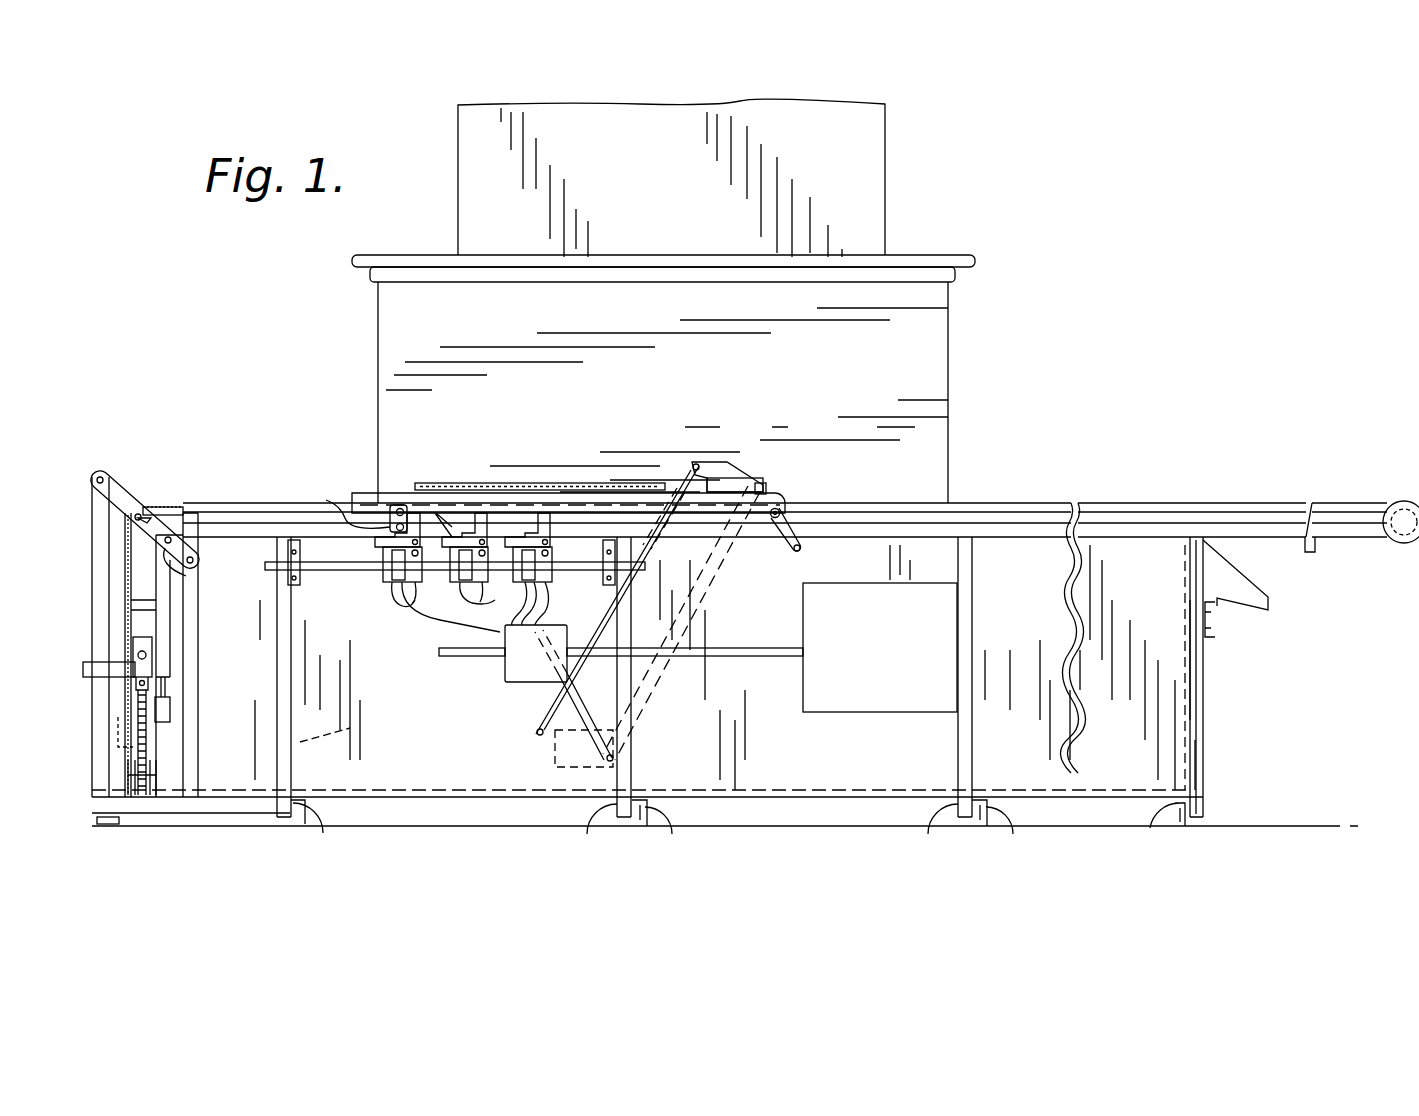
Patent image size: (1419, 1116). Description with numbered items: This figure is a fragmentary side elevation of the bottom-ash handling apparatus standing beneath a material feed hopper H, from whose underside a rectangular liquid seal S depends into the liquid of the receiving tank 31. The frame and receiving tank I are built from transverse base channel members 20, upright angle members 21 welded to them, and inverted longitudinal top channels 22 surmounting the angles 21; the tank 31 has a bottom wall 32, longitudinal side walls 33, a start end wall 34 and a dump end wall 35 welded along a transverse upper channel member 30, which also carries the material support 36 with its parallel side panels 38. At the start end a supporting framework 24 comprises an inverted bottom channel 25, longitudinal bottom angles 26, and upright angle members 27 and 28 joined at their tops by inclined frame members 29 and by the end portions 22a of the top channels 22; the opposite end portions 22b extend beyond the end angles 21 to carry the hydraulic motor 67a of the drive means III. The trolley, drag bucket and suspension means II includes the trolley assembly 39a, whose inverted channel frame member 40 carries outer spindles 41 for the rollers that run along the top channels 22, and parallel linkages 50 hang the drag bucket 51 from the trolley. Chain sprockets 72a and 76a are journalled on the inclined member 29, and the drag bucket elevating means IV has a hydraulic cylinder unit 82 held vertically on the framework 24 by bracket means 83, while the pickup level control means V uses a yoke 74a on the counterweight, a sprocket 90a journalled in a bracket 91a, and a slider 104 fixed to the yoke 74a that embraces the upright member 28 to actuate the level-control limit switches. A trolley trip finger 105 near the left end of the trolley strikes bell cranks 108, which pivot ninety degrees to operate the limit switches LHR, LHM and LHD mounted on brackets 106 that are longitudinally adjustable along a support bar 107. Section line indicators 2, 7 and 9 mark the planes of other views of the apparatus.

The material feed hopper H is at (902, 168).
The rectangular liquid seal S is at (966, 392).
The inverted longitudinal top channels 22 is at (1012, 537).
The end portions of inverted top channels 22a is at (262, 530).
The end portions of inverted top channels 22b is at (1350, 538).
The hydraulic motor 67a is at (1395, 507).
The upright angle member 28 is at (96, 560).
The supporting framework 24 is at (95, 588).
The inclined frame members 29 is at (115, 480).
The sprocket 76a is at (140, 520).
The sprocket 72a is at (211, 572).
The upright angle members 27 is at (198, 684).
The bracket means 83 is at (172, 648).
The hydraulic cylinder unit 82 is at (158, 630).
The slider 104 is at (95, 670).
The yoke 74a is at (140, 680).
The sprocket 90a is at (140, 797).
The bracket 91a is at (128, 765).
The inverted bottom channel 25 is at (90, 812).
The longitudinal bottom angles 26 is at (272, 808).
The receiving tank 31 is at (490, 812).
The upright angle members 21 is at (278, 778).
The transverse base channel members 20 is at (322, 818).
The inverted channel frame member 40 is at (582, 492).
The trolley assembly 39a is at (367, 473).
The trolley trip finger 105 is at (336, 500).
The outer spindles 41 is at (400, 505).
The parallel linkages 50 is at (745, 457).
The drag bucket 51 is at (538, 763).
The start end wall 34 is at (344, 727).
The bottom wall 32 is at (725, 790).
The bell cranks 108 is at (372, 540).
The support bar 107 is at (338, 580).
The limit switch LHR is at (395, 583).
The limit switch LHM is at (460, 583).
The limit switch LHD is at (535, 583).
The mounting brackets 106 is at (545, 570).
The side walls 33 is at (698, 647).
The side panels 38 is at (1217, 570).
The transverse upper channel member 30 is at (1215, 620).
The dump end wall 35 is at (1185, 712).
The material support 36 is at (1325, 615).
The section line 7 is at (150, 410).
The section line 9 is at (173, 460).
The section line 2 is at (790, 439).
The trolley, drag bucket and drag bucket suspension means II is at (668, 455).
The drive means III is at (1403, 478).
The drag bucket elevating means IV is at (208, 610).
The drag bucket pickup level control means V is at (208, 738).
The frame and receiving tank I is at (1240, 712).